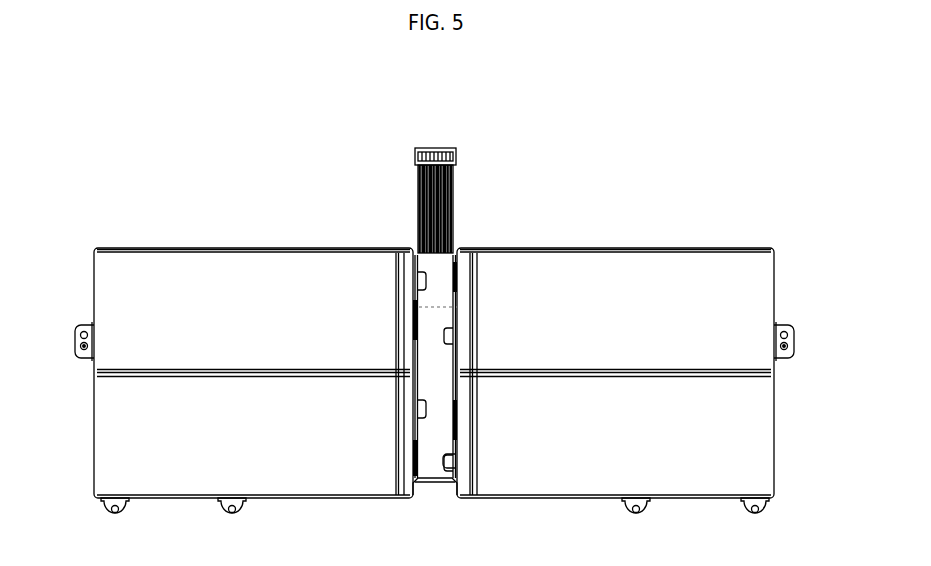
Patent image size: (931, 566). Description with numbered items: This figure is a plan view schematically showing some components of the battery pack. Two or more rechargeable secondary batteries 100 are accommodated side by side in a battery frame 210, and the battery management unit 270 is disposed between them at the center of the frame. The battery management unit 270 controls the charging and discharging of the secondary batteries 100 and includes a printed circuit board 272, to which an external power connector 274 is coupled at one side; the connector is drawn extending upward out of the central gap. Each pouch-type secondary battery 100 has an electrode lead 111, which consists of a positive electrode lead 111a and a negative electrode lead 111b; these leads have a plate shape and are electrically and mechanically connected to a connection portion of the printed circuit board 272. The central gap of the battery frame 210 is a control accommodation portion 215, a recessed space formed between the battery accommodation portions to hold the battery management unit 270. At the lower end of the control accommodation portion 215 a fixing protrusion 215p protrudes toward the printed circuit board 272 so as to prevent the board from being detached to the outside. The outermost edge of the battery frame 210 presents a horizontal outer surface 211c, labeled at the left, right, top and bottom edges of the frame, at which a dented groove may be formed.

The secondary battery 100 is at (727, 312).
The battery frame 210 is at (113, 241).
The horizontal outer surface 211c is at (94, 283).
The electrode lead 111 is at (377, 313).
The positive electrode lead 111a is at (424, 283).
The negative electrode lead 111b is at (414, 338).
The battery management unit 270 is at (481, 169).
The printed circuit board 272 is at (440, 277).
The external power connector 274 is at (442, 150).
The control accommodation portion 215 is at (448, 432).
The fixing protrusion 215p is at (437, 470).